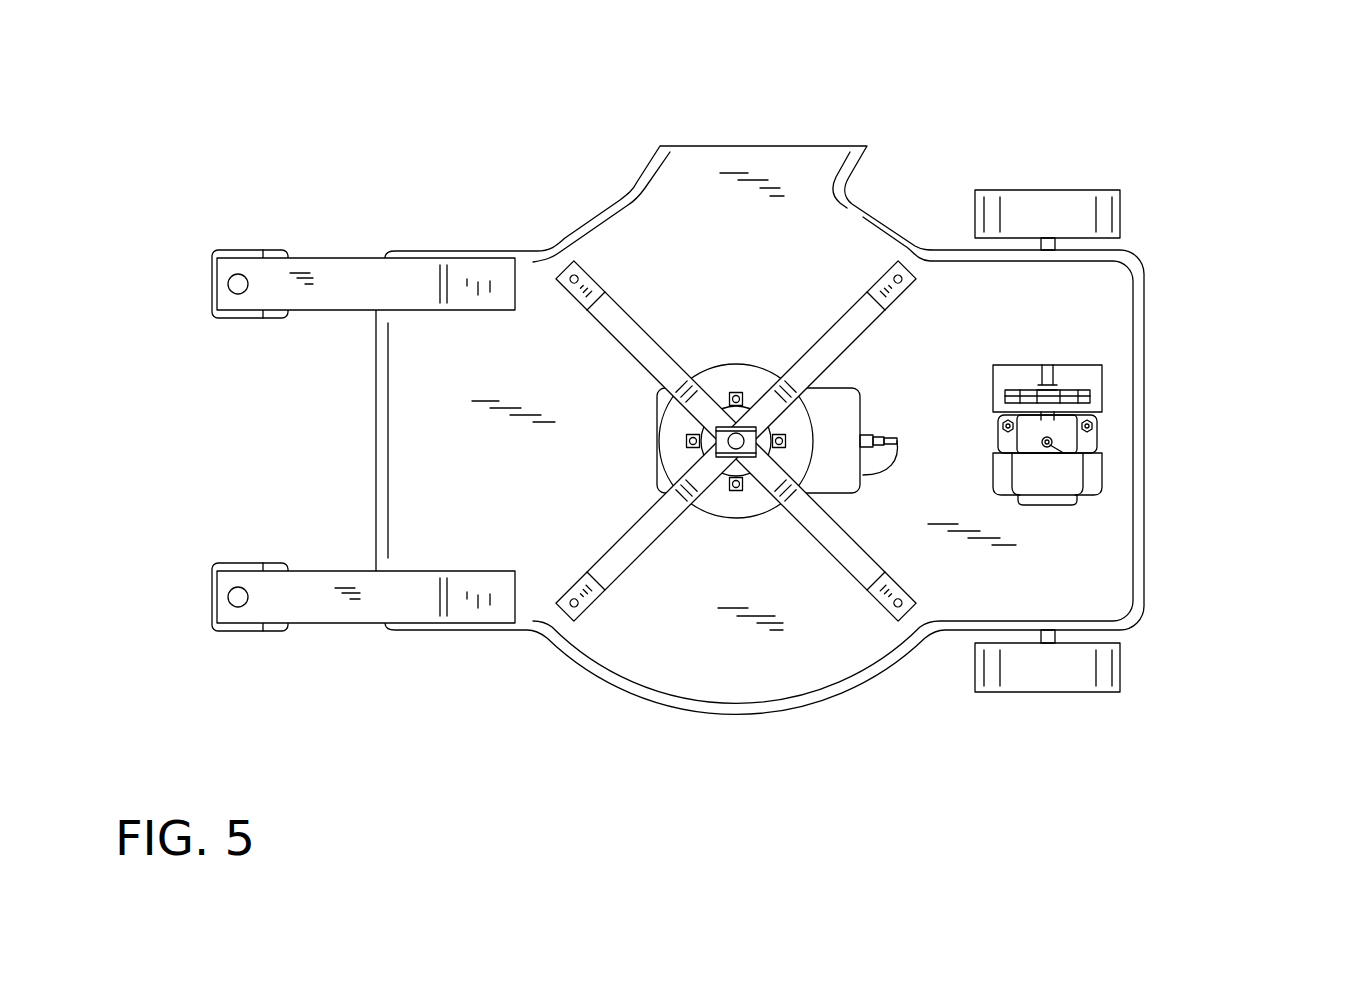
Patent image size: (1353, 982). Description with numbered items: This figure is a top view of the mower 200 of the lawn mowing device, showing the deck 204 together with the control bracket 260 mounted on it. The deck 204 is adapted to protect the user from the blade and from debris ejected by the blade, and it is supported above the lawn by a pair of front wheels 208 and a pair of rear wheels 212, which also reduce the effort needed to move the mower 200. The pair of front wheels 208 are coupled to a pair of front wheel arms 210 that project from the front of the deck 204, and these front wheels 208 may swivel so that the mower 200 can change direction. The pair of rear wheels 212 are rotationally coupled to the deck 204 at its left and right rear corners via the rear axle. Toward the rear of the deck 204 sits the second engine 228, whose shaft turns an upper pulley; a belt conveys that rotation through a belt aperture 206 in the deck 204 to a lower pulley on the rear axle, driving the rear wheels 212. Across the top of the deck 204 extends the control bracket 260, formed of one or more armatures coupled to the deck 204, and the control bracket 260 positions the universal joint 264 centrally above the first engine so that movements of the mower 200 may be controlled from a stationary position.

The mower 200 is at (233, 62).
The deck 204 is at (593, 668).
The belt aperture 206 is at (1102, 387).
The pair of front wheels 208 is at (253, 320).
The pair of front wheel arms 210 is at (352, 280).
The pair of rear wheels 212 is at (1105, 213).
The second engine 228 is at (1063, 468).
The control bracket 260 is at (840, 562).
The universal joint 264 is at (722, 455).